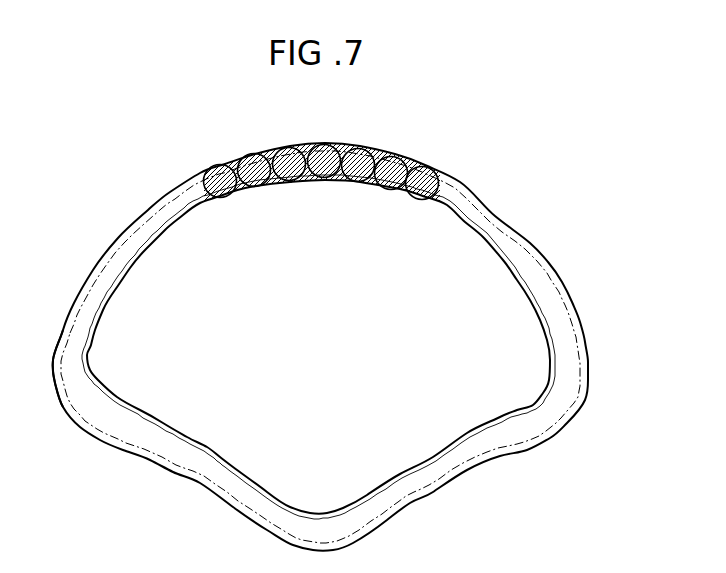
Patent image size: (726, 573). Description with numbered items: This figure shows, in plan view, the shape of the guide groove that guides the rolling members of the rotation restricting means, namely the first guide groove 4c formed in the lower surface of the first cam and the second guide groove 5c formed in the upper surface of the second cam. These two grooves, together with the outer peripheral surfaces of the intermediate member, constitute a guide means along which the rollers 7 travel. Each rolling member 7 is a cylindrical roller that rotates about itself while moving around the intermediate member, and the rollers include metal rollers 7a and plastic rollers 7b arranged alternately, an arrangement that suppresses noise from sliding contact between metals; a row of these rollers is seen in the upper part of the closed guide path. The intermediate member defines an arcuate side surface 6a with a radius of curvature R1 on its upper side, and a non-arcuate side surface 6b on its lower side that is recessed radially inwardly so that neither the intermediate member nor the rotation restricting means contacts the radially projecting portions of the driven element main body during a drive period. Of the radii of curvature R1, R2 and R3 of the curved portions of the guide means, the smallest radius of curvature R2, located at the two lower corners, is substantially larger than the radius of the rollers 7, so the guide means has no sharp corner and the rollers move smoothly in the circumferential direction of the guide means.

The rolling members 7 is at (337, 150).
The metal rollers 7a is at (436, 180).
The plastic rollers 7b is at (398, 157).
The first guide groove 4c is at (490, 227).
The second guide groove 5c is at (349, 347).
The arcuate side surface 6a is at (515, 268).
The non-arcuate side surface 6b is at (211, 443).
The radius of curvature R1 is at (323, 412).
The smallest radius of curvature R2 is at (140, 357).
The radius of curvature R3 is at (320, 452).